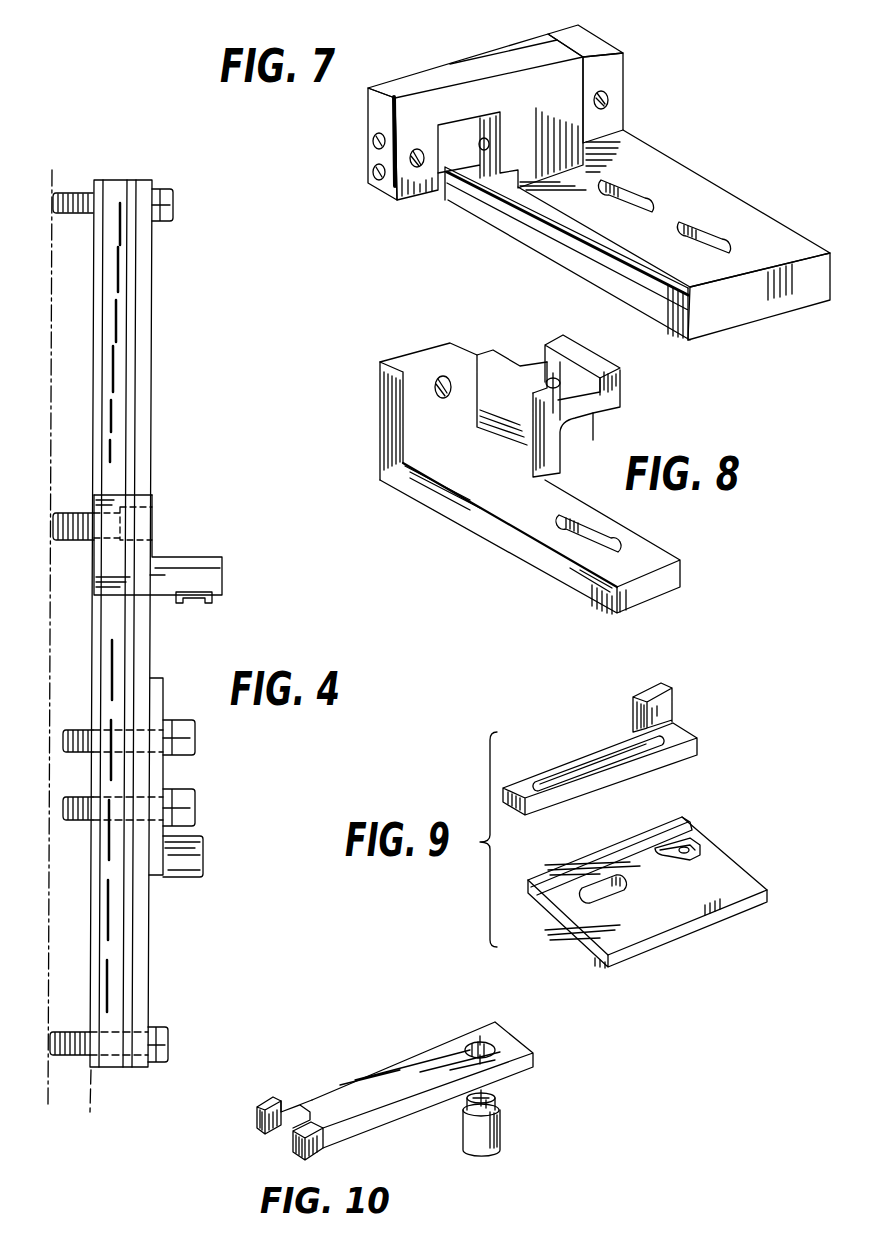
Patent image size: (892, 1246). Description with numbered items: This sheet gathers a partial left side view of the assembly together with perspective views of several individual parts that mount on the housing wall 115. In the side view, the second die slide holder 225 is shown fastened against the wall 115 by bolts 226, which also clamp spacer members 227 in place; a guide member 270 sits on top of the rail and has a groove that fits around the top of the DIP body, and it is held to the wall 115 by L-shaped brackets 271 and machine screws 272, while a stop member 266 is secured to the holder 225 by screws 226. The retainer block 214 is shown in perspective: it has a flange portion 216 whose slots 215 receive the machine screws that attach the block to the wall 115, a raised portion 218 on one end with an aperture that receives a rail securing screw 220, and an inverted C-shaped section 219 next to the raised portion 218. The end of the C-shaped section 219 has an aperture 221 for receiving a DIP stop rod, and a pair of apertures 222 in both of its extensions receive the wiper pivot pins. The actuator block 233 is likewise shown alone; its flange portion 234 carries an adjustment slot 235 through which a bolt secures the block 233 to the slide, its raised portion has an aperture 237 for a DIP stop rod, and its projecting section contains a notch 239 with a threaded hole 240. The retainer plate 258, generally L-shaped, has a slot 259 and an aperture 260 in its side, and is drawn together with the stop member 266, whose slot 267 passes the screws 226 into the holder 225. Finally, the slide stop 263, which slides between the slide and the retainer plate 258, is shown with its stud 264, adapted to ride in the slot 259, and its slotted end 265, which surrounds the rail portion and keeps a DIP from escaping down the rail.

In FIG. 4, the wall 115 is at (58, 688).
In FIG. 7, the retainer block 214 is at (763, 317).
In FIG. 7, the slots 215 is at (717, 238).
In FIG. 7, the flange portion 216 is at (662, 163).
In FIG. 7, the raised portion 218 is at (598, 37).
In FIG. 7, the inverted C-shaped section 219 is at (420, 80).
In FIG. 7, the rail securing screw 220 is at (608, 98).
In FIG. 7, the aperture 221 is at (416, 150).
In FIG. 7, the apertures 222 is at (376, 172).
In FIG. 4, the second die slide holder 225 is at (120, 322).
In FIG. 4, the bolts 226 is at (173, 202).
In FIG. 4, the spacer members 227 is at (97, 693).
In FIG. 8, the actuator block 233 is at (442, 503).
In FIG. 8, the flange portion 234 is at (522, 523).
In FIG. 8, the adjustment slot 235 is at (598, 534).
In FIG. 8, the aperture 237 is at (433, 390).
In FIG. 8, the notch 239 is at (565, 440).
In FIG. 8, the threaded hole 240 is at (560, 378).
In FIG. 9, the retainer plate 258 is at (737, 878).
In FIG. 9, the slot 259 is at (592, 898).
In FIG. 9, the aperture 260 is at (690, 851).
In FIG. 10, the slide stop 263 is at (433, 1052).
In FIG. 10, the stud 264 is at (500, 1128).
In FIG. 10, the slotted end 265 is at (256, 1112).
In FIG. 4, the stop member 266 is at (183, 878).
In FIG. 9, the stop member 266 is at (643, 692).
In FIG. 9, the slot 267 is at (590, 761).
In FIG. 4, the guide member 270 is at (205, 599).
In FIG. 4, the L-shaped brackets 271 is at (165, 560).
In FIG. 4, the machine screws 272 is at (138, 526).